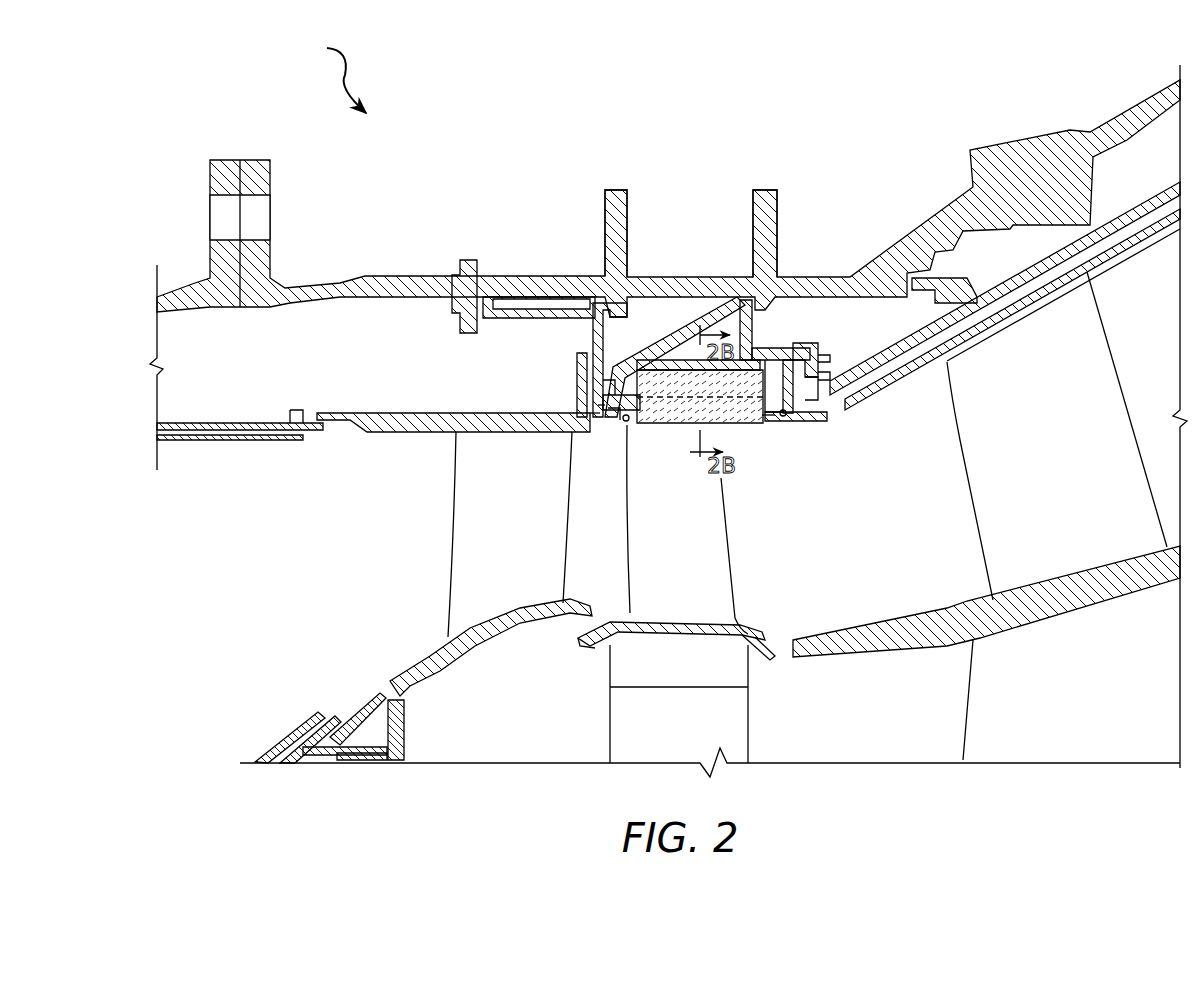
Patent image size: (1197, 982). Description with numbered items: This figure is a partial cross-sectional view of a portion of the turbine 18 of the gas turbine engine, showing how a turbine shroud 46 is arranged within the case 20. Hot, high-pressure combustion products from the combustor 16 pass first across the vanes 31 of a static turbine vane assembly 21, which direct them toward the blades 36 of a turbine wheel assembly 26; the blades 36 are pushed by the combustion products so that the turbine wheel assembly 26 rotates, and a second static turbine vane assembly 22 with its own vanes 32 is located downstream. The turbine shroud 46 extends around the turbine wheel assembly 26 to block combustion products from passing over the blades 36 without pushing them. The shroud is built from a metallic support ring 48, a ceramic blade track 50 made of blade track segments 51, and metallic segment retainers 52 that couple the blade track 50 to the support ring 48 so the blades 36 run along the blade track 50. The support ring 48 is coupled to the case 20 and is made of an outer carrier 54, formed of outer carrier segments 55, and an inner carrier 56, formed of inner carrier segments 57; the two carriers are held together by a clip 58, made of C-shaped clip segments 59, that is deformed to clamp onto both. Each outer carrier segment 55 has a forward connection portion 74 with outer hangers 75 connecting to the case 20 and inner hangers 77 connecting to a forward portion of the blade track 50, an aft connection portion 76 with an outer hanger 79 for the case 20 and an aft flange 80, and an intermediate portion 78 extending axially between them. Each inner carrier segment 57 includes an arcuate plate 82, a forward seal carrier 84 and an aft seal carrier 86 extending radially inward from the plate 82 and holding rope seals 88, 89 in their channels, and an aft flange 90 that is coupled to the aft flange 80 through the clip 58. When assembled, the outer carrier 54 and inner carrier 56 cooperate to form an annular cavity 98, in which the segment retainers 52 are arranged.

The combustor 16 is at (237, 430).
The turbine 18 is at (331, 76).
The case 20 is at (508, 272).
The static turbine vane assembly 21 is at (430, 622).
The static turbine vane assembly 22 is at (970, 587).
The turbine wheel assembly 26 is at (765, 635).
The vanes 31 is at (480, 513).
The vanes 32 is at (990, 483).
The blades 36 is at (700, 548).
The turbine shroud 46 is at (828, 324).
The metallic support ring 48 is at (858, 345).
The ceramic blade track 50 is at (818, 425).
The blade track segment 51 is at (770, 428).
The metallic segment retainers 52 is at (775, 352).
The outer carrier 54 is at (597, 320).
The outer carrier segments 55 is at (585, 340).
The inner carrier 56 is at (600, 404).
The inner carrier segments 57 is at (601, 426).
The clip 58 is at (835, 358).
The clip segments 59 is at (835, 377).
The forward connection portion 74 is at (540, 300).
The outer hangers 75 is at (614, 305).
The aft connection portion 76 is at (760, 353).
The inner hangers 77 is at (594, 420).
The intermediate portion 78 is at (653, 337).
The outer hanger 79 is at (752, 300).
The aft flange 80 is at (812, 345).
The arcuate plate 82 is at (628, 385).
The forward seal carrier 84 is at (648, 430).
The aft seal carrier 86 is at (745, 425).
The rope seal 88 is at (613, 428).
The rope seal 89 is at (786, 430).
The aft flange 90 is at (822, 398).
The annular cavity 98 is at (727, 335).